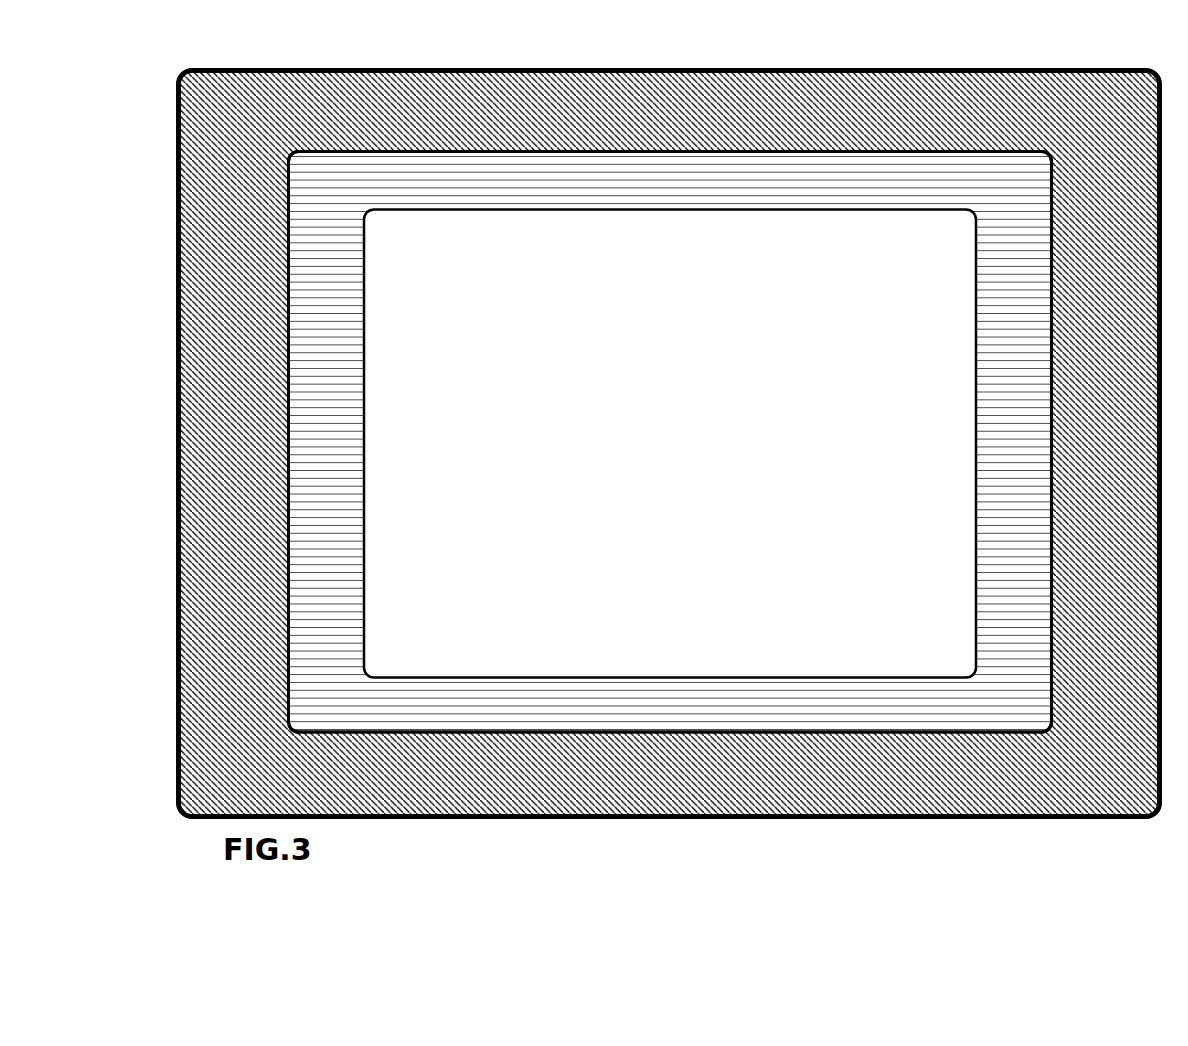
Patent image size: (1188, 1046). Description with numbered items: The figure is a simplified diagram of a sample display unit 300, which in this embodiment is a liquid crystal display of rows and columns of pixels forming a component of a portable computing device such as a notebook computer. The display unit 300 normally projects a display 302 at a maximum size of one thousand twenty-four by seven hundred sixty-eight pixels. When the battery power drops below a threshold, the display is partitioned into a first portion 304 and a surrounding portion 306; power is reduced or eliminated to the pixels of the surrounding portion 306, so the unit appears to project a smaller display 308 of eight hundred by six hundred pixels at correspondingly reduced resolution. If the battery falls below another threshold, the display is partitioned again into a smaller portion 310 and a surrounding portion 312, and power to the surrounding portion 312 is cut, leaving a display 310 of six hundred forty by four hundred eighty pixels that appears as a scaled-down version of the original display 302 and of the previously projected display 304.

The display unit 300 is at (639, 419).
The display 302 is at (177, 162).
The first portion 304 is at (315, 537).
The surrounding portion 306 is at (208, 208).
The display 308 is at (283, 365).
The smaller portion 310 is at (468, 537).
The surrounding portion 312 is at (381, 110).